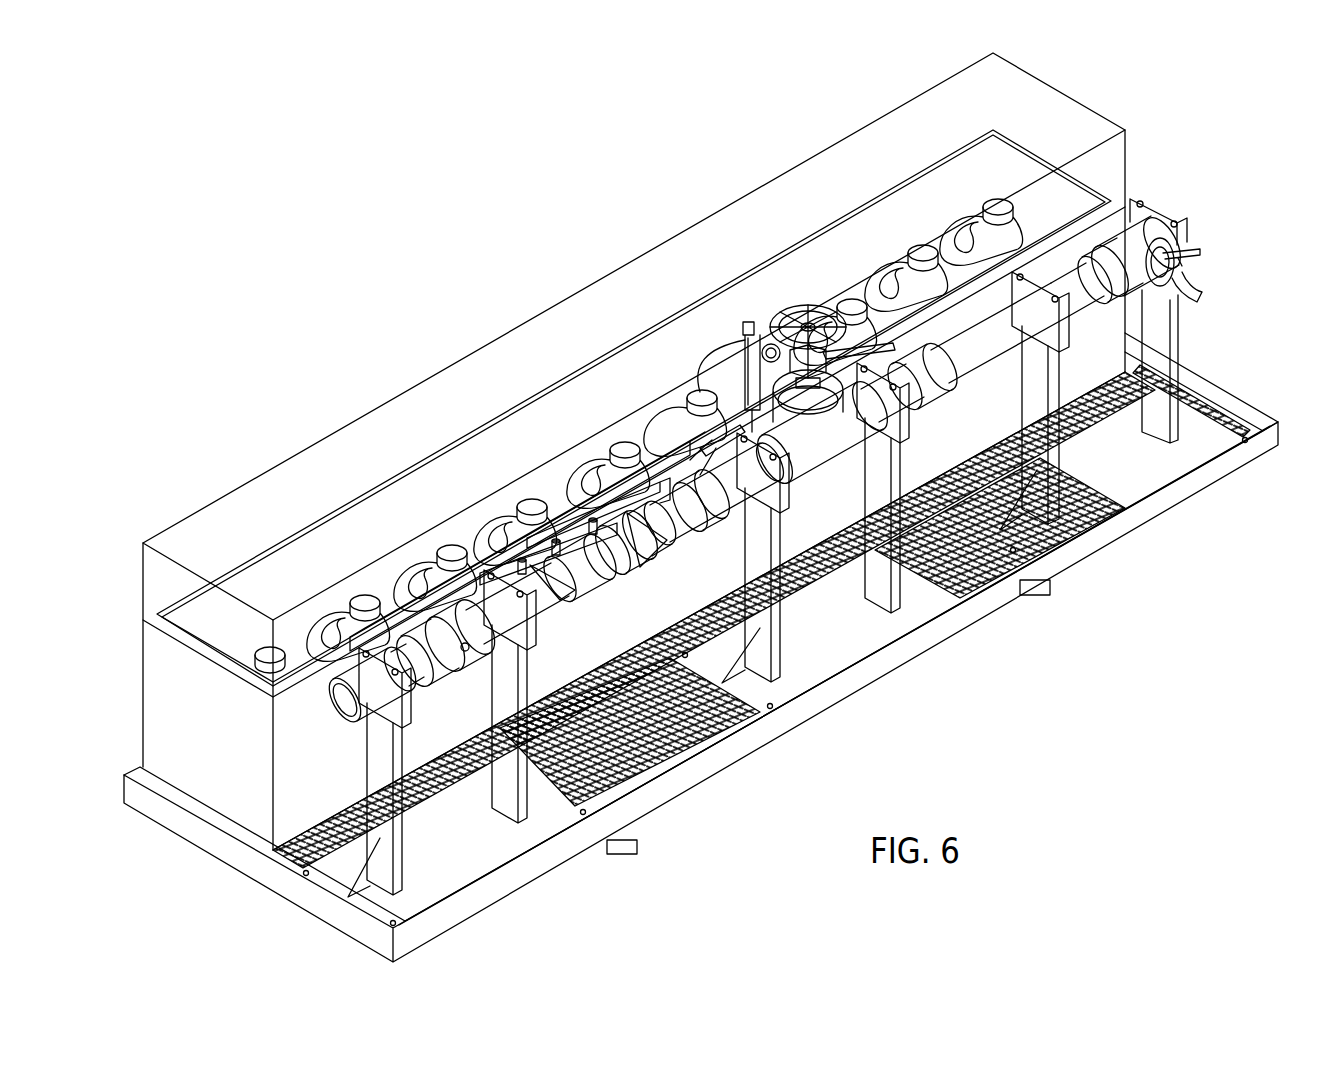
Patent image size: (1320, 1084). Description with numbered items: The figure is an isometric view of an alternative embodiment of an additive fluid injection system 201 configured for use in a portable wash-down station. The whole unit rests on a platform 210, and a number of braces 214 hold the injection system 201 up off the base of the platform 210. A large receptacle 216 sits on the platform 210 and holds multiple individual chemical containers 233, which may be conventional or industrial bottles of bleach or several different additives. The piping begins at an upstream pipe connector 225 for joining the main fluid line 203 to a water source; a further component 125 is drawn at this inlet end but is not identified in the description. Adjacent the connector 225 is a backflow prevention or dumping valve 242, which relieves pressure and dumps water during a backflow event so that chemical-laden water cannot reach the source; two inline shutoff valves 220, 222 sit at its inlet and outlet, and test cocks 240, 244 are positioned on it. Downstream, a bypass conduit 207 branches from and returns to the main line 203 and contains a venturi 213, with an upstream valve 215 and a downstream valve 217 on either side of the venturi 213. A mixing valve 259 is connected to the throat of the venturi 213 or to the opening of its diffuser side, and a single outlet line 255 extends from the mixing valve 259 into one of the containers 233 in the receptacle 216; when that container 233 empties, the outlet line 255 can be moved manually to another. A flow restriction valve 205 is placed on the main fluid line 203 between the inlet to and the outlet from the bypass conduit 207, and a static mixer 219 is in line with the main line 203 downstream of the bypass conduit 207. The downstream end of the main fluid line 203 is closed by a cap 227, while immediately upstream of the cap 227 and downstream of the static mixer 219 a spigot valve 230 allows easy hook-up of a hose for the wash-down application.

The additive fluid injection system 201 is at (392, 250).
The inlet connection 125 is at (355, 672).
The main fluid line 203 is at (735, 495).
The flow restriction valve 205 is at (808, 325).
The bypass conduit 207 is at (697, 470).
The platform 210 is at (722, 760).
The venturi 213 is at (767, 405).
The braces 214 is at (772, 640).
The upstream valve 215 is at (697, 453).
The receptacle 216 is at (895, 117).
The downstream valve 217 is at (887, 343).
The static mixer 219 is at (985, 348).
The inline shutoff valve 220 is at (398, 615).
The inline shutoff valve 222 is at (560, 520).
The upstream pipe connector 225 is at (367, 717).
The cap 227 is at (1177, 212).
The spigot valve 230 is at (1197, 305).
The chemical containers 233 is at (985, 207).
The test cock 240 is at (465, 647).
The dumping valve 242 is at (552, 588).
The test cock 244 is at (595, 534).
The outlet line 255 is at (722, 340).
The mixing valve 259 is at (765, 345).